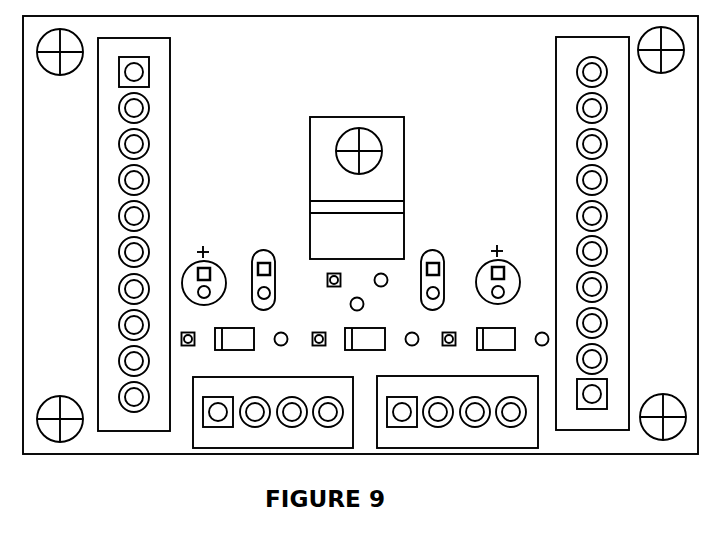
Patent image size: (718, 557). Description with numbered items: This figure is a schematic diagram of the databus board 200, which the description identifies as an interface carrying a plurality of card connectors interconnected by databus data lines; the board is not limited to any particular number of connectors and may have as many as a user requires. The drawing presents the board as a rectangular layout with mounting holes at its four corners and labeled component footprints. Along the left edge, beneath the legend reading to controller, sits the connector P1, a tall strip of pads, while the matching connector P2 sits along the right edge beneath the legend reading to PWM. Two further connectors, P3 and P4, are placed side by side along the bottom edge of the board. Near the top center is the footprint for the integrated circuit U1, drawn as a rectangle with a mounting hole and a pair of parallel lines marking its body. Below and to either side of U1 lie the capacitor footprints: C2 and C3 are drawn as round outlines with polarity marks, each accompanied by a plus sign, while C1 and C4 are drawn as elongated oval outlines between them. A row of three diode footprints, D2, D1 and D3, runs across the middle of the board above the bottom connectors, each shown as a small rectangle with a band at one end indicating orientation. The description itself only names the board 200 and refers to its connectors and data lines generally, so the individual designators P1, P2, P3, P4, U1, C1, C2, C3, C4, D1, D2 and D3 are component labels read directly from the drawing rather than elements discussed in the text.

The databus board 200 is at (360, 276).
The controller connector P1 is at (119, 234).
The PWM connector P2 is at (610, 233).
The connector P3 is at (273, 401).
The connector P4 is at (457, 401).
The integrated circuit U1 is at (357, 177).
The capacitor C1 is at (274, 269).
The capacitor C2 is at (213, 275).
The capacitor C3 is at (510, 274).
The capacitor C4 is at (443, 269).
The diode D1 is at (365, 339).
The diode D2 is at (234, 339).
The diode D3 is at (496, 339).